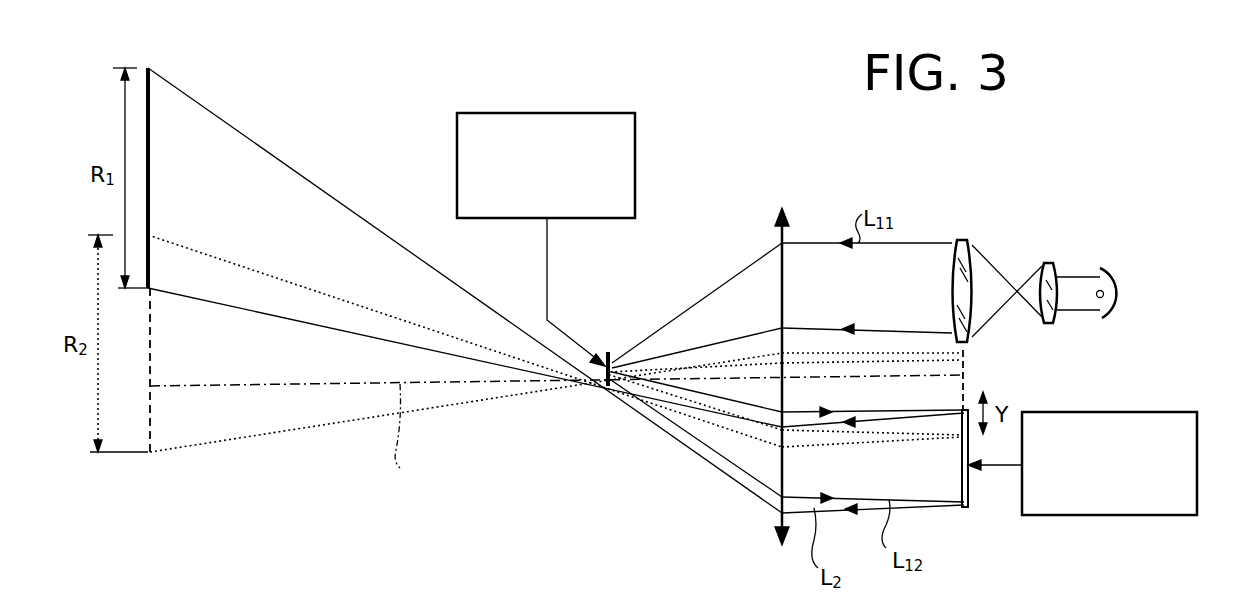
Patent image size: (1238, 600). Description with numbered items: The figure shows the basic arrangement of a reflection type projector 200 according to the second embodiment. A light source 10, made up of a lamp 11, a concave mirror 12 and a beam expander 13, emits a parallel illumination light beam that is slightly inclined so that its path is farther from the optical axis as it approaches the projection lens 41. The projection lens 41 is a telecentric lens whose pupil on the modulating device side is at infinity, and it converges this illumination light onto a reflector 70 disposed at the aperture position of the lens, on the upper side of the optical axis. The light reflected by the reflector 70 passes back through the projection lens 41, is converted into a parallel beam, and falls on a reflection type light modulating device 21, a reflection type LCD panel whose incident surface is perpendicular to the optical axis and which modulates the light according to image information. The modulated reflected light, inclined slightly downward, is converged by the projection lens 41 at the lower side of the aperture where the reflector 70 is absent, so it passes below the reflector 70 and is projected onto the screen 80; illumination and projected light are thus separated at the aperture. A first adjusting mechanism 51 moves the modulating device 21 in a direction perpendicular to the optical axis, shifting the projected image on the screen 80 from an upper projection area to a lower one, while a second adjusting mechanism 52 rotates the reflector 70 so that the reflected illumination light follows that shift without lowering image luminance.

The light source 10 is at (1061, 278).
The lamp 11 is at (1098, 290).
The concave mirror 12 is at (1118, 286).
The beam expander 13 is at (973, 335).
The reflection type light modulating device 21 is at (968, 508).
The projection lens 41 is at (781, 513).
The first adjusting mechanism 51 is at (1150, 412).
The second adjusting mechanism 52 is at (577, 113).
The reflector 70 is at (612, 357).
The screen 80 is at (149, 158).
The reflection type projector 200 is at (778, 150).